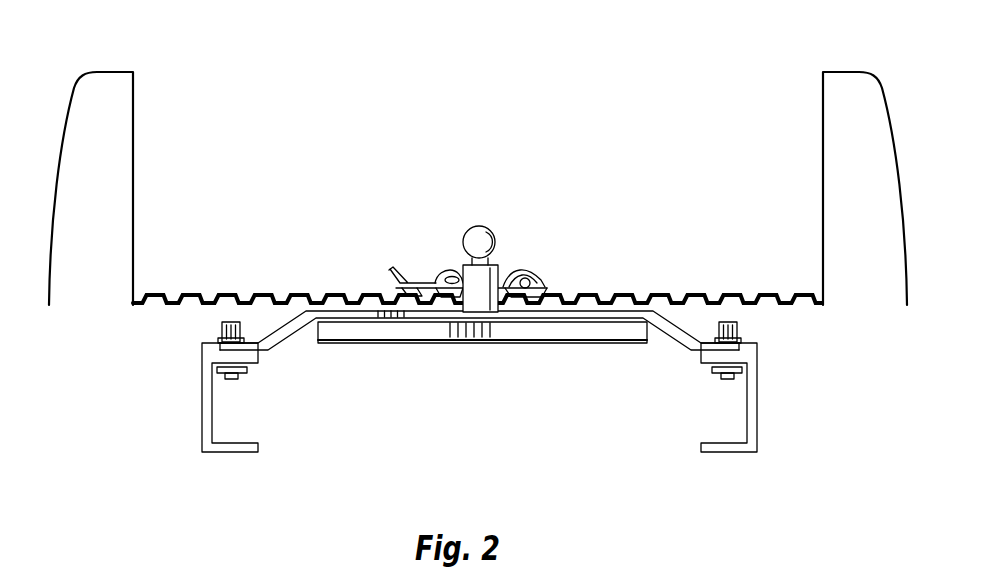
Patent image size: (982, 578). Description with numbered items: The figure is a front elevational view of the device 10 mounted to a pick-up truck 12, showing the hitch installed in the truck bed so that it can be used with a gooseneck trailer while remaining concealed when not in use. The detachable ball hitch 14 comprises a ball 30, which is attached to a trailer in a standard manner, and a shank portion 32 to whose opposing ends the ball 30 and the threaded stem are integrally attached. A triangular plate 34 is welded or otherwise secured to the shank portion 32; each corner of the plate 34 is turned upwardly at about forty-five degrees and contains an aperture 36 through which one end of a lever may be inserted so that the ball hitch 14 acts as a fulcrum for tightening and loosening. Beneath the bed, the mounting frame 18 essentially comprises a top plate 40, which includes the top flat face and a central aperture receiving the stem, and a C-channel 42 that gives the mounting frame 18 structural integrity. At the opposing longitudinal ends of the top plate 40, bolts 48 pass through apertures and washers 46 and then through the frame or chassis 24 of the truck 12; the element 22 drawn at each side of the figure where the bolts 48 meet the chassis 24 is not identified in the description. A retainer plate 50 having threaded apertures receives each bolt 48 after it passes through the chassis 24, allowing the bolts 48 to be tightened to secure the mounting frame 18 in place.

The device 10 is at (538, 257).
The pick-up truck 12 is at (168, 303).
The detachable ball hitch 14 is at (492, 230).
The mounting frame 18 is at (467, 343).
The bolts 22 is at (217, 330).
The chassis 24 is at (202, 401).
The ball 30 is at (470, 240).
The shank portion 32 is at (458, 277).
The triangular plate 34 is at (543, 286).
The aperture 36 is at (517, 278).
The top plate 40 is at (673, 338).
The C-channel 42 is at (553, 342).
The washers 46 is at (262, 342).
The bolts 48 is at (238, 321).
The retainer plate 50 is at (247, 373).